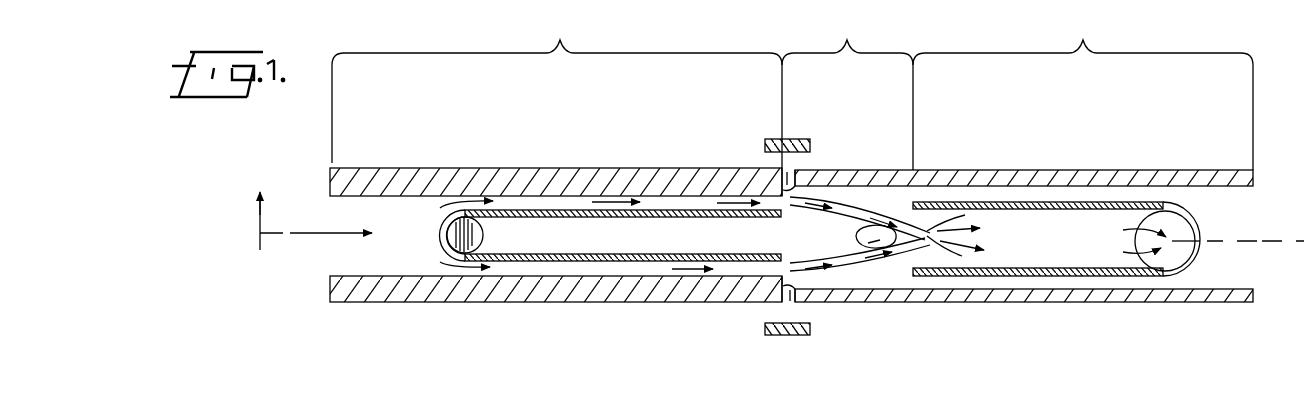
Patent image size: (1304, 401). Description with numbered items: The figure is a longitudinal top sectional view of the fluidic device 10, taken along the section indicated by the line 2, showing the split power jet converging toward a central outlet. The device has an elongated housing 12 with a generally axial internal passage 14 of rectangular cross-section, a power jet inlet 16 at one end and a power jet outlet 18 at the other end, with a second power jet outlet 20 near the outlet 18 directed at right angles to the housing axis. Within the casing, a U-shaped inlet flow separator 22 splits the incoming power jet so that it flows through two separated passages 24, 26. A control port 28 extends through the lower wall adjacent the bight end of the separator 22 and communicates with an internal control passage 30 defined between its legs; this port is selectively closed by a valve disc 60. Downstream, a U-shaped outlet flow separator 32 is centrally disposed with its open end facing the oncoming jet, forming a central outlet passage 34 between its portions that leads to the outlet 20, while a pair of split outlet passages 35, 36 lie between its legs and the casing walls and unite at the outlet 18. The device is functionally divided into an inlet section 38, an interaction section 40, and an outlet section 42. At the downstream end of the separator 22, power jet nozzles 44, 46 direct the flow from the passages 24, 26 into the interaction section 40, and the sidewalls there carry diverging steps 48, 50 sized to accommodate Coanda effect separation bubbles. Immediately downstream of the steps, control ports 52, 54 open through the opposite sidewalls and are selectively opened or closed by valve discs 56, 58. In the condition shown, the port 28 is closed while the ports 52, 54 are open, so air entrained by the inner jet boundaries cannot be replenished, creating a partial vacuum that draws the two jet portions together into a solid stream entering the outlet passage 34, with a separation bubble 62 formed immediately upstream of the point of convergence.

The section line 2 is at (267, 244).
The fluidic device 10 is at (1036, 167).
The housing 12 is at (1040, 303).
The internal passage 14 is at (1067, 188).
The power jet inlet 16 is at (330, 247).
The power jet outlet 18 is at (1257, 222).
The second power jet outlet 20 is at (1175, 250).
The inlet flow separator 22 is at (527, 212).
The separated passage 24 is at (550, 202).
The separated passage 26 is at (560, 262).
The control port 28 is at (450, 252).
The internal control passage 30 is at (637, 240).
The outlet flow separator 32 is at (1178, 215).
The outlet passage 34 is at (1057, 243).
The split outlet passage 35 is at (998, 196).
The split outlet passage 36 is at (980, 279).
The inlet section 38 is at (557, 87).
The interaction section 40 is at (847, 88).
The outlet section 42 is at (1083, 88).
The power jet nozzle 44 is at (782, 205).
The power jet nozzle 46 is at (782, 270).
The diverging step 48 is at (796, 186).
The diverging step 50 is at (796, 289).
The control port 52 is at (790, 174).
The control port 54 is at (790, 291).
The valve disc 56 is at (790, 139).
The valve disc 58 is at (786, 335).
The valve disc 60 is at (470, 222).
The separation bubble 62 is at (875, 235).